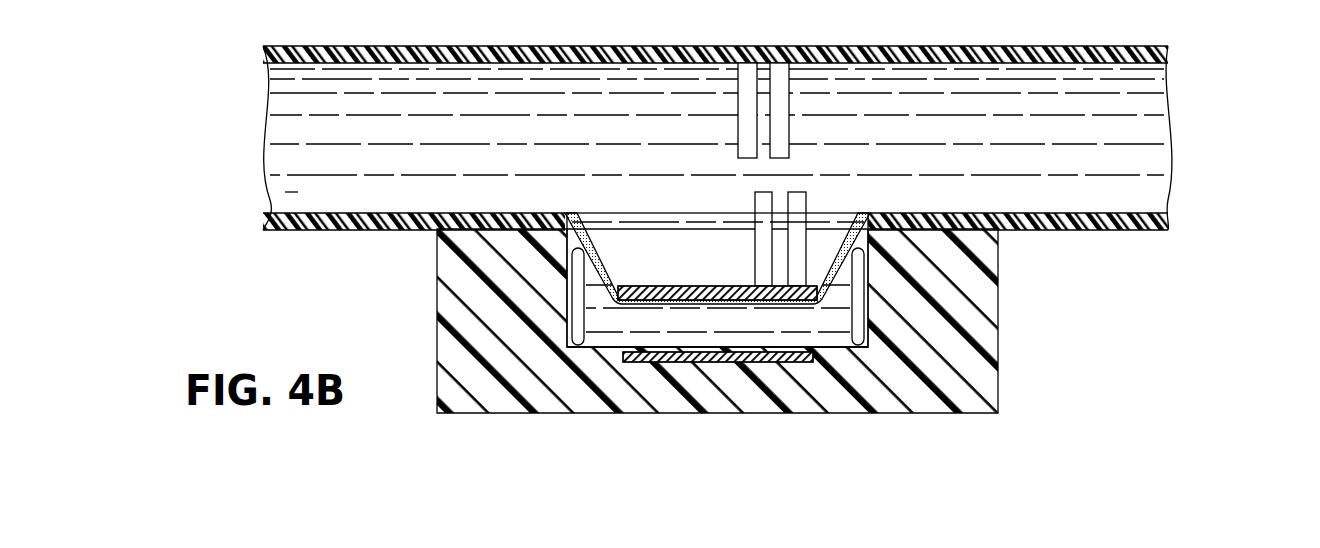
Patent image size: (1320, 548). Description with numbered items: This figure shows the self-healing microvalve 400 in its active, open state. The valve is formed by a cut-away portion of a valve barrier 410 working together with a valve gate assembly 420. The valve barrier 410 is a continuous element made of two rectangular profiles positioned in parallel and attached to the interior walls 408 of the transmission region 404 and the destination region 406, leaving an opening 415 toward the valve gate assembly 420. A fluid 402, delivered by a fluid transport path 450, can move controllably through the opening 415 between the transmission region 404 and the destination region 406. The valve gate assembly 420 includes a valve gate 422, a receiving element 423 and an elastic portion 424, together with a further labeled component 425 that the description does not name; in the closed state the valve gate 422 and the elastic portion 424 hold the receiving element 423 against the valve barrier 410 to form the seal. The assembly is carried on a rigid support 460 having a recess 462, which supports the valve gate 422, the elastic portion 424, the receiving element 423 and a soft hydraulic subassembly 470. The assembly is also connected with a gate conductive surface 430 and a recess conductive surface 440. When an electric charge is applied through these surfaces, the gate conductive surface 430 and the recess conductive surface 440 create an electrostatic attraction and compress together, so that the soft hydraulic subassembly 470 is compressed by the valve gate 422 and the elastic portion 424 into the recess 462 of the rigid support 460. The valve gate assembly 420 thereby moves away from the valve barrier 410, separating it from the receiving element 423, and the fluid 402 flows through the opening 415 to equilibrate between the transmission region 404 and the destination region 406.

The self-healing microvalve 400 is at (189, 45).
The fluid 402 is at (308, 125).
The transmission region 404 is at (296, 192).
The destination region 406 is at (1157, 159).
The interior walls 408 is at (1100, 58).
The valve barrier 410 is at (808, 86).
The opening 415 is at (793, 177).
The valve gate assembly 420 is at (867, 235).
The valve gate 422 is at (872, 288).
The receiving element 423 is at (762, 203).
The elastic portion 424 is at (566, 253).
The sensor plate 425 is at (730, 285).
The gate conductive surface 430 is at (640, 302).
The recess conductive surface 440 is at (637, 353).
The fluid transport path 450 is at (308, 107).
The rigid support 460 is at (477, 322).
The recess 462 is at (873, 337).
The soft hydraulic subassembly 470 is at (807, 317).